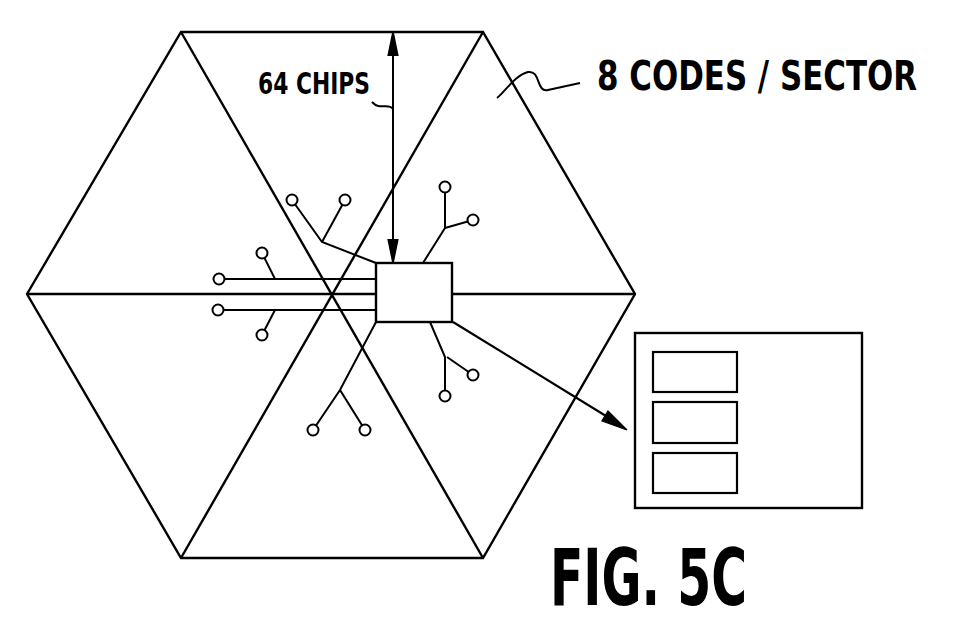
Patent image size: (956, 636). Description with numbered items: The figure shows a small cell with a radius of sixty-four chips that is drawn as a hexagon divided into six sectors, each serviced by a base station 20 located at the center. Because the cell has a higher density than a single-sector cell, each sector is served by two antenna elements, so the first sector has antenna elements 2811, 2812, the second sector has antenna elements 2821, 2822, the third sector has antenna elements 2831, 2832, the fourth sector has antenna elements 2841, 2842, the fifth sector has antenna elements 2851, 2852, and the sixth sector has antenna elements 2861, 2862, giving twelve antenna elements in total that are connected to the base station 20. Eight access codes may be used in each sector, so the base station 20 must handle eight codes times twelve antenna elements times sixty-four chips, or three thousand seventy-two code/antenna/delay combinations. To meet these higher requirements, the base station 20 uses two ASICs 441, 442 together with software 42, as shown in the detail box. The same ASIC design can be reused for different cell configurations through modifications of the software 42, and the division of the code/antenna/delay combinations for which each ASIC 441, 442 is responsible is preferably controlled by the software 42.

The base station 20 is at (452, 270).
The software 42 is at (717, 372).
The ASIC 441 is at (727, 425).
The ASIC 442 is at (728, 476).
The antenna element 2811 is at (439, 187).
The antenna element 2812 is at (488, 203).
The antenna element 2821 is at (500, 372).
The antenna element 2822 is at (441, 401).
The antenna element 2831 is at (365, 436).
The antenna element 2832 is at (307, 431).
The antenna element 2841 is at (265, 340).
The antenna element 2842 is at (214, 307).
The antenna element 2851 is at (213, 279).
The antenna element 2852 is at (257, 250).
The antenna element 2861 is at (292, 194).
The antenna element 2862 is at (340, 200).